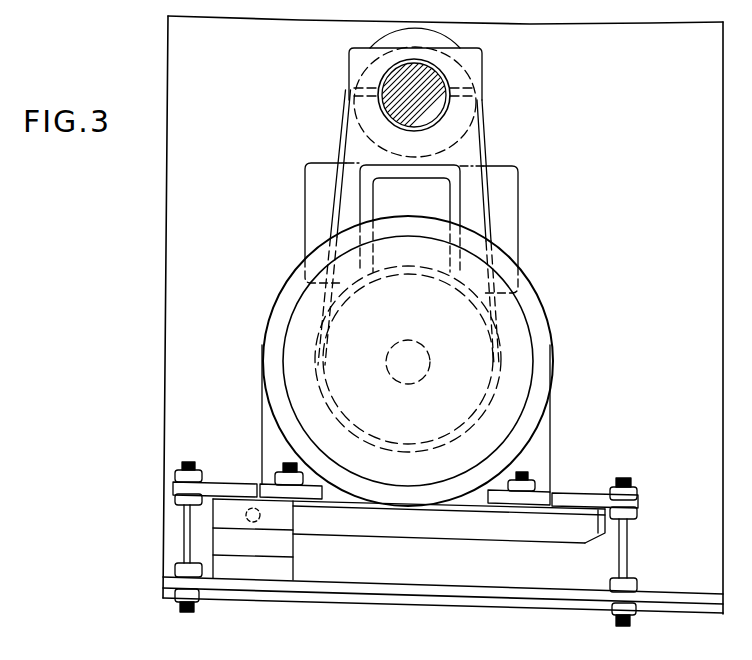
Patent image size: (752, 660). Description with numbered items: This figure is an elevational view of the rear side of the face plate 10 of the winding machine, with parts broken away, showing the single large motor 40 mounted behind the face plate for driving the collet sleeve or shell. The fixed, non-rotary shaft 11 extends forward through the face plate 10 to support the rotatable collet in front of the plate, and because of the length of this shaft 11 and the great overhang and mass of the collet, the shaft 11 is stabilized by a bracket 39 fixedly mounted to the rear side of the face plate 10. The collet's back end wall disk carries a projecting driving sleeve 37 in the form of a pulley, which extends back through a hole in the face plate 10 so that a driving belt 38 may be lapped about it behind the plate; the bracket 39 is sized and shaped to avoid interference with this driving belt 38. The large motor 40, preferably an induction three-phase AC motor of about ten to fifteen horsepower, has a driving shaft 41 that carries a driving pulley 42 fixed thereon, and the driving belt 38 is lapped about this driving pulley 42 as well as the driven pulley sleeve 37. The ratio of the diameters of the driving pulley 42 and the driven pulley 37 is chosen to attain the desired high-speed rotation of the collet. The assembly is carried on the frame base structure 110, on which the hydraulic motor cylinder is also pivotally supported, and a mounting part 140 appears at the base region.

The face plate 10 is at (610, 155).
The fixed non-rotary shaft 11 is at (428, 88).
The driving sleeve 37 is at (428, 31).
The driving belt 38 is at (372, 46).
The bracket 39 is at (522, 170).
The large motor 40 is at (287, 283).
The driving shaft 41 is at (424, 378).
The driving pulley 42 is at (515, 307).
The frame base structure 110 is at (372, 588).
The mounting bracket 140 is at (522, 532).